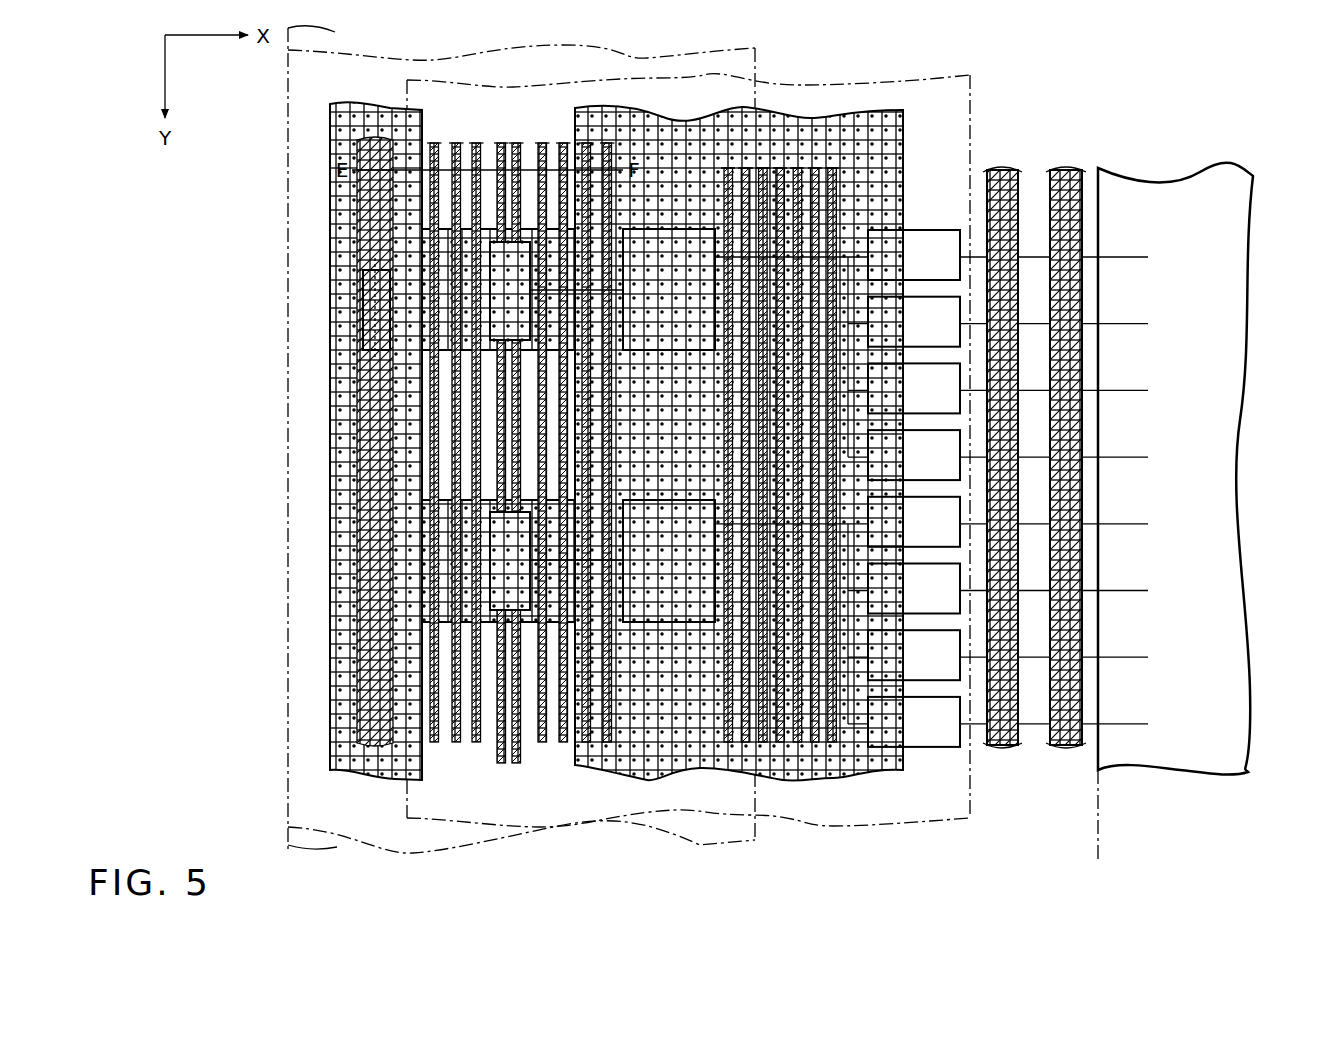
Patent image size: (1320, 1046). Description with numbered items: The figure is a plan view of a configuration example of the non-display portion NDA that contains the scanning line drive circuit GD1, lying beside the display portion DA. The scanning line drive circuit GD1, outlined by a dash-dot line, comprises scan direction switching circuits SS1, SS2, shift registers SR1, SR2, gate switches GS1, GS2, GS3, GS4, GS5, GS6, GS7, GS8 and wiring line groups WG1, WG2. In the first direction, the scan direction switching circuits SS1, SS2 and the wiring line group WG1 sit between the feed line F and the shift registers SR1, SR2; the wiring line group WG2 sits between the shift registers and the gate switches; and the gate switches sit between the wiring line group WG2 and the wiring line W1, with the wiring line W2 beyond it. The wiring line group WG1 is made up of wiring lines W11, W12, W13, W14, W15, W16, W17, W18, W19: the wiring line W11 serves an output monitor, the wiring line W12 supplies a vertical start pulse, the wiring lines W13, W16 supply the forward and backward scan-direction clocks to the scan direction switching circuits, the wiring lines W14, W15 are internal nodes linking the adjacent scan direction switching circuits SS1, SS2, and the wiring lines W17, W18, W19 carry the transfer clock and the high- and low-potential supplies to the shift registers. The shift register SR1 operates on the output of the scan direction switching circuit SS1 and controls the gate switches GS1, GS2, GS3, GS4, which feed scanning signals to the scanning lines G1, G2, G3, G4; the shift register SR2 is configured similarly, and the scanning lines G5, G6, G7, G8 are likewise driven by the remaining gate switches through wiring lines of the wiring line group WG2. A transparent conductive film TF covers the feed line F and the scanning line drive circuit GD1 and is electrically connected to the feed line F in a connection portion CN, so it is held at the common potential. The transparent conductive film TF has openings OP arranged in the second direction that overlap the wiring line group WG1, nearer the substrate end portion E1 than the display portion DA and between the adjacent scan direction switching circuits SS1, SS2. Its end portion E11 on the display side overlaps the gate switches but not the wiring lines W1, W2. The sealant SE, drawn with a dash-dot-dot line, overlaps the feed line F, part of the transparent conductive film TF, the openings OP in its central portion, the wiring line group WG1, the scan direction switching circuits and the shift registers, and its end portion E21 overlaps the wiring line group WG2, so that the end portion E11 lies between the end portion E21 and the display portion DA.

The sealant SE is at (670, 57).
The end portion of the sealant E21 is at (760, 86).
The substrate end portion E1 is at (288, 117).
The end portion of the transparent conductive film E11 is at (907, 157).
The transparent conductive film TF is at (330, 660).
The feed line F is at (357, 697).
The connection portion CN is at (360, 313).
The openings OP is at (413, 226).
The wiring line W11 is at (430, 400).
The wiring line W12 is at (450, 420).
The wiring line W13 is at (472, 440).
The wiring line W14 is at (495, 458).
The wiring line W15 is at (512, 478).
The wiring line W16 is at (547, 400).
The wiring line W17 is at (568, 422).
The wiring line W18 is at (591, 446).
The wiring line W19 is at (612, 468).
The scan direction switching circuit SS1 is at (556, 291).
The scan direction switching circuit SS2 is at (556, 561).
The shift register SR1 is at (669, 289).
The shift register SR2 is at (669, 561).
The wiring line group WG1 is at (423, 765).
The wiring line group WG2 is at (718, 745).
The scanning line drive circuit GD1 is at (938, 822).
The gate switch GS1 is at (914, 255).
The gate switch GS2 is at (914, 322).
The gate switch GS3 is at (914, 388).
The gate switch GS4 is at (914, 455).
The gate switch GS5 is at (914, 522).
The gate switch GS6 is at (914, 589).
The gate switch GS7 is at (914, 655).
The gate switch GS8 is at (914, 722).
The scanning line G1 is at (1128, 257).
The scanning line G2 is at (1128, 324).
The scanning line G3 is at (1128, 390).
The scanning line G4 is at (1128, 457).
The scanning line G5 is at (1128, 524).
The scanning line G6 is at (1128, 590).
The scanning line G7 is at (1128, 657).
The scanning line G8 is at (1128, 724).
The wiring line W1 is at (1000, 748).
The wiring line W2 is at (1063, 748).
The display portion DA is at (1224, 425).
The non-display portion NDA is at (1098, 860).